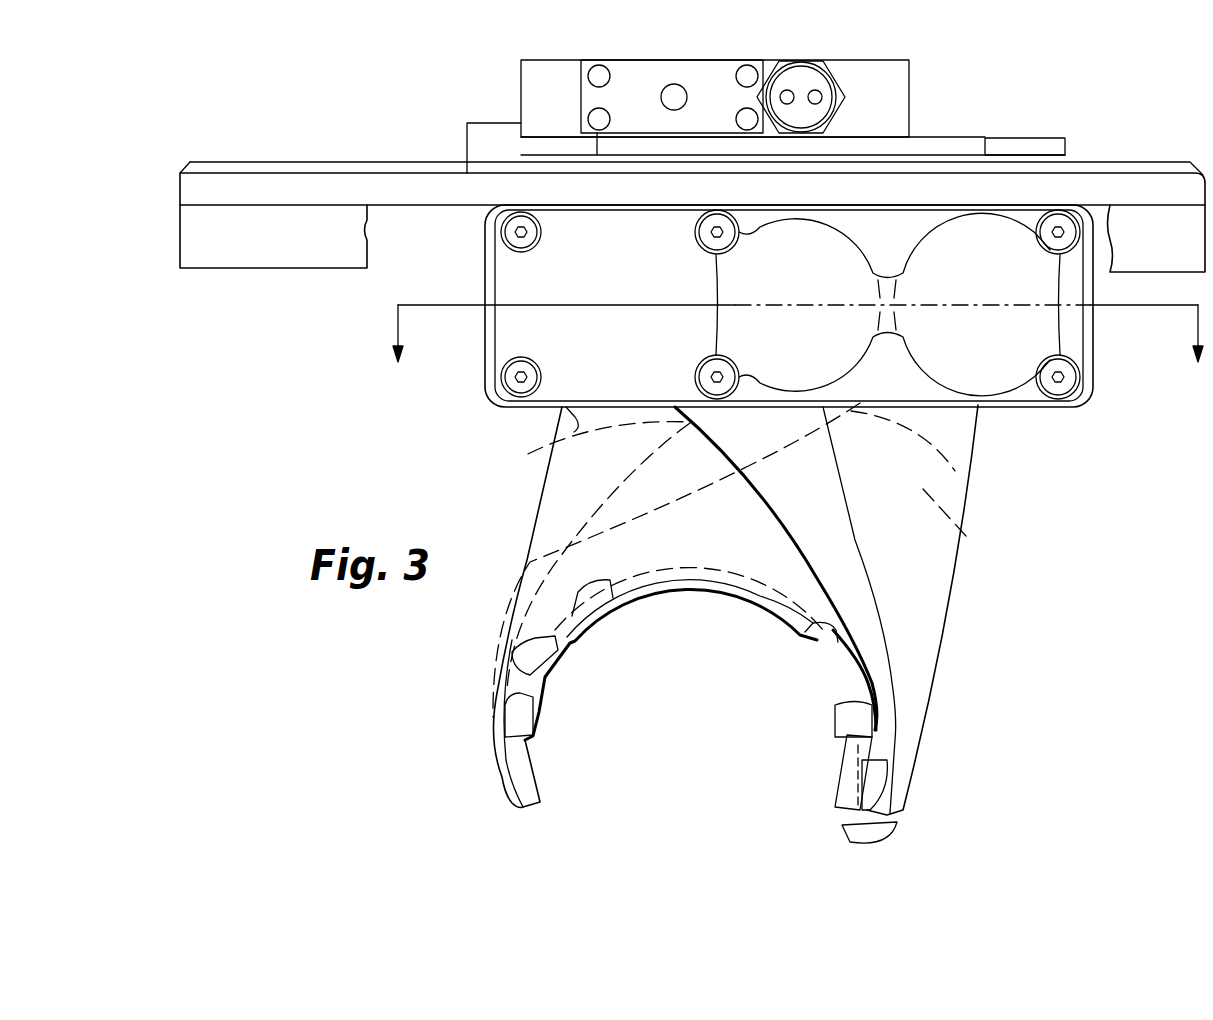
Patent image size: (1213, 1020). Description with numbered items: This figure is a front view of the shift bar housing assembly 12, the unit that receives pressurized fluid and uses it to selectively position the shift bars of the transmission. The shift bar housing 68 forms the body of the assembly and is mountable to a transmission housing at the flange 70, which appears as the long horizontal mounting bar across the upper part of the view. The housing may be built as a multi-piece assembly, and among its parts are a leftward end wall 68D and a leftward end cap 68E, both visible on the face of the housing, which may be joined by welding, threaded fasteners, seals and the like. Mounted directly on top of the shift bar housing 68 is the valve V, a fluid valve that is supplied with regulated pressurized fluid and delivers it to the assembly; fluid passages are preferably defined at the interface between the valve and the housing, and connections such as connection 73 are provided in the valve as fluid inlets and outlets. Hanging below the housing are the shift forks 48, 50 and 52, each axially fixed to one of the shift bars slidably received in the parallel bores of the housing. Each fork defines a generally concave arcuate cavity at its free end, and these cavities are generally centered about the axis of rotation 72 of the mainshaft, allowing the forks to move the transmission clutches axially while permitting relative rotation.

The shift bar housing assembly 12 is at (322, 126).
The flange 70 is at (185, 245).
The valve V is at (581, 87).
The connection 73 is at (661, 97).
The shift bar housing 68 is at (521, 322).
The leftward end wall 68D is at (510, 263).
The leftward end cap 68E is at (1003, 386).
The shift fork 52 is at (540, 497).
The axis of rotation 72 is at (688, 747).
The shift fork 50 is at (835, 765).
The shift fork 48 is at (948, 620).